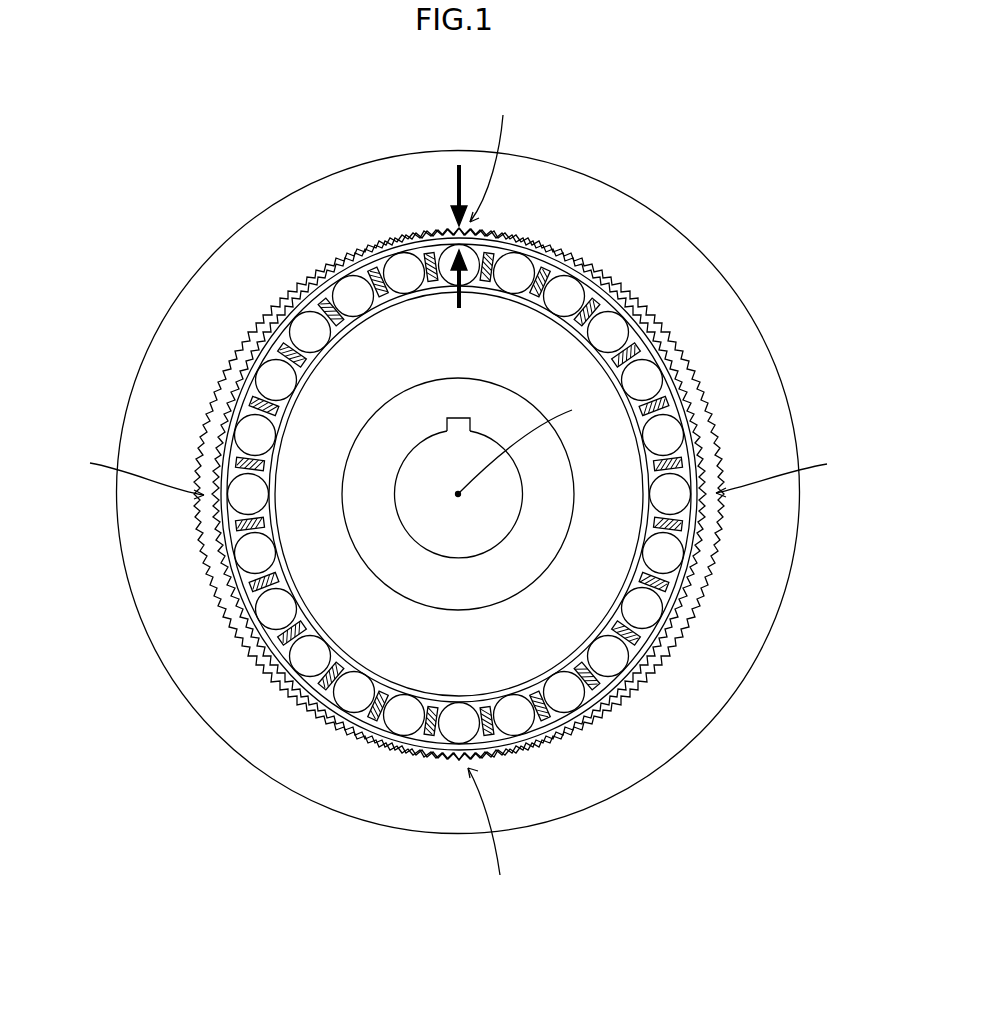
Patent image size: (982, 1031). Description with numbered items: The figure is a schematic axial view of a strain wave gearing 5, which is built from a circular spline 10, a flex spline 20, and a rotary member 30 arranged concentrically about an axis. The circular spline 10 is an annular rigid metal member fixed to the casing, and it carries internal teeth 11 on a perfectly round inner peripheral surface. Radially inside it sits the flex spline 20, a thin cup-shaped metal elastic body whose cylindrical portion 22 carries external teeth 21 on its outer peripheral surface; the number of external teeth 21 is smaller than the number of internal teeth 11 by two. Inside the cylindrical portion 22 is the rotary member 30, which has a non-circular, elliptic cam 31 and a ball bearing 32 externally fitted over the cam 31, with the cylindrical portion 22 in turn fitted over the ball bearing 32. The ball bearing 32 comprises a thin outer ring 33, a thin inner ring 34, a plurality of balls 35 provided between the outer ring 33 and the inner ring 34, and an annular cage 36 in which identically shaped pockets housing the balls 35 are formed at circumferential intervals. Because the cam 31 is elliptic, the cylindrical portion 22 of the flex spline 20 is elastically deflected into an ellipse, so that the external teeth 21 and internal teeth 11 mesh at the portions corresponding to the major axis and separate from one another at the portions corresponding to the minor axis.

The strain wave gearing 5 is at (267, 208).
The circular spline 10 is at (613, 205).
The internal teeth 11 is at (656, 321).
The flex spline 20 is at (700, 392).
The external teeth 21 is at (712, 540).
The cylindrical portion 22 is at (213, 405).
The rotary member 30 is at (105, 672).
The cam 31 is at (343, 641).
The ball bearing 32 is at (317, 698).
The outer ring 33 is at (348, 727).
The inner ring 34 is at (648, 645).
The balls 35 is at (396, 722).
The cage 36 is at (274, 352).